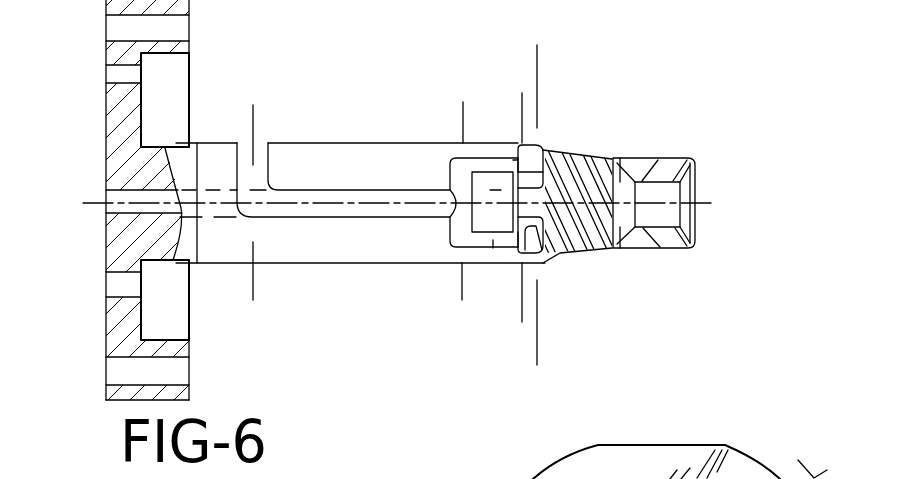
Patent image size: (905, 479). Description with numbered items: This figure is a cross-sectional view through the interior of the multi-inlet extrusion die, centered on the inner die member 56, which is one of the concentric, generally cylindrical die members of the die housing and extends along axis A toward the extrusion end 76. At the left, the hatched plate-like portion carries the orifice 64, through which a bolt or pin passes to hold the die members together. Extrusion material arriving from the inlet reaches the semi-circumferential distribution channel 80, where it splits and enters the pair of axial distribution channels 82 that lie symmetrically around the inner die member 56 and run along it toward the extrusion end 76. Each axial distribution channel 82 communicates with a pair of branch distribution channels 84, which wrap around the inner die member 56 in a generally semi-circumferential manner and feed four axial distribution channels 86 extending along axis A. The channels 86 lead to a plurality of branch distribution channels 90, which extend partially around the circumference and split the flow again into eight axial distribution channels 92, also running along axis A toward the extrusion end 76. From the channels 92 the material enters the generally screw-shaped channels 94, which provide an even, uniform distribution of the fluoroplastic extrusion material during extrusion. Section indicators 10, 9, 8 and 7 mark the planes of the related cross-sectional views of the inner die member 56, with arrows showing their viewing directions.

The orifice 64 is at (113, 77).
The inner die member 56 is at (315, 252).
The semi-circumferential distribution channel 80 is at (247, 165).
The axial distribution channels 82 is at (313, 175).
The branch distribution channels 84 is at (445, 165).
The axial distribution channels 86 is at (493, 250).
The branch distribution channels 90 is at (553, 152).
The axial distribution channels 92 is at (537, 143).
The extrusion end 76 is at (593, 163).
The screw-shaped channels 94 is at (600, 168).
The axis A is at (723, 205).
The section line 10- 10 is at (280, 117).
The section line 9- 9 is at (477, 117).
The section line 8- 8 is at (528, 100).
The section line 7- 7 is at (573, 58).